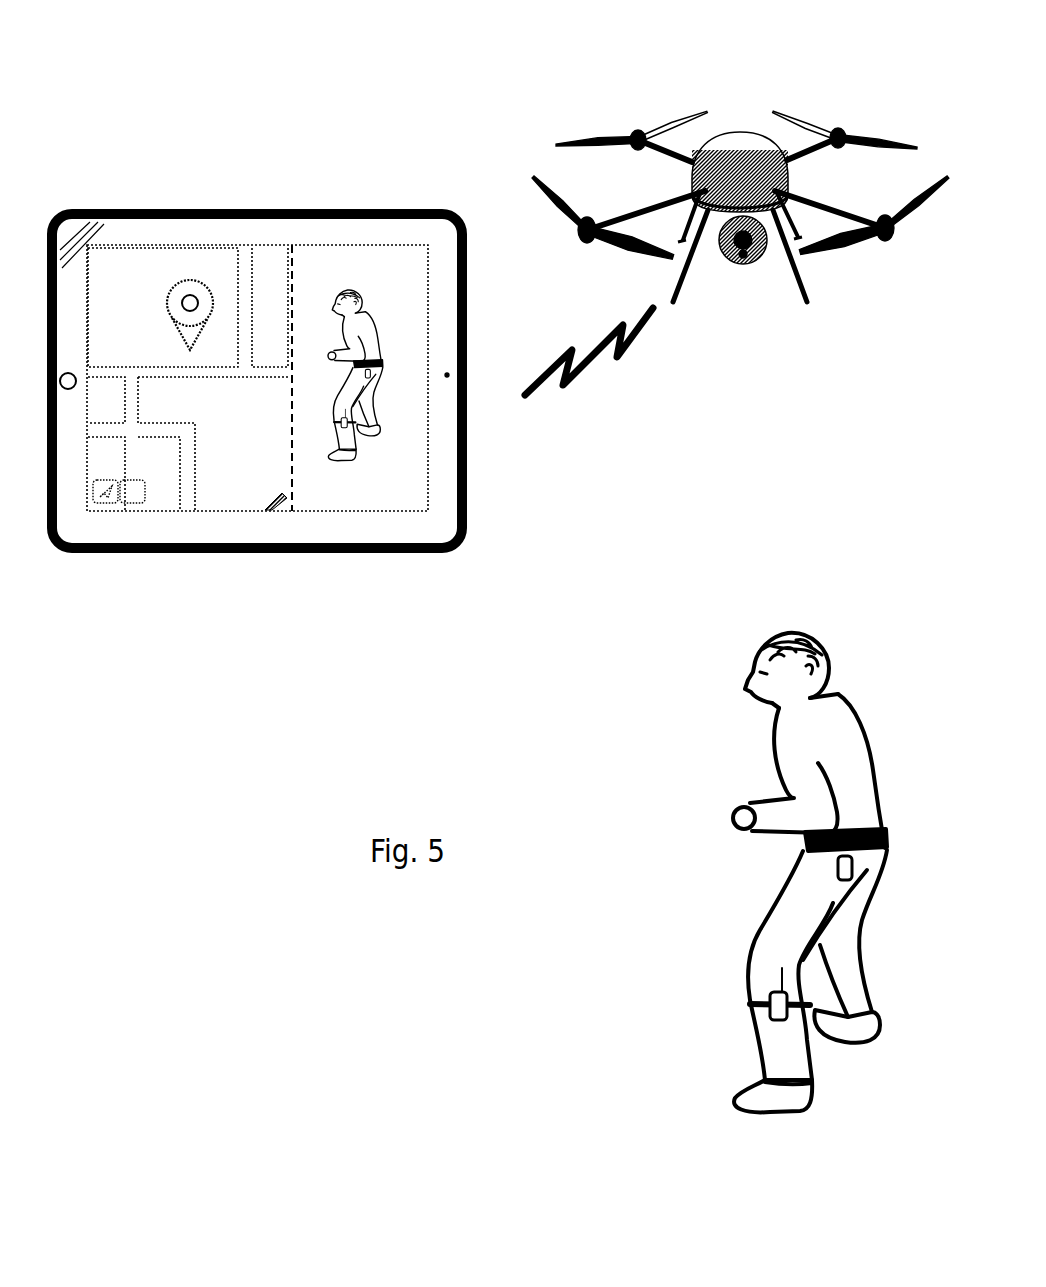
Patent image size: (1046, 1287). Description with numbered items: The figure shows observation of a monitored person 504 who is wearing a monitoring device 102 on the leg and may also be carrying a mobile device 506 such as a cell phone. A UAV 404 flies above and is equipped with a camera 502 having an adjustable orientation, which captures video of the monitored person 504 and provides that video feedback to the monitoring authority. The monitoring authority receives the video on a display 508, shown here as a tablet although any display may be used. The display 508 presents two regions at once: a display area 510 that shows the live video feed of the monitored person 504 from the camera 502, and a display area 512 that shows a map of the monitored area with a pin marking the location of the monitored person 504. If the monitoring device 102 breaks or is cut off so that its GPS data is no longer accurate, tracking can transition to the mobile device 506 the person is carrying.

The monitoring device 102 is at (731, 992).
The UAV 404 is at (638, 74).
The camera 502 is at (745, 285).
The monitored person 504 is at (728, 642).
The mobile device 506 is at (819, 860).
The display 508 is at (176, 167).
The display area 510 is at (353, 496).
The display area 512 is at (204, 484).